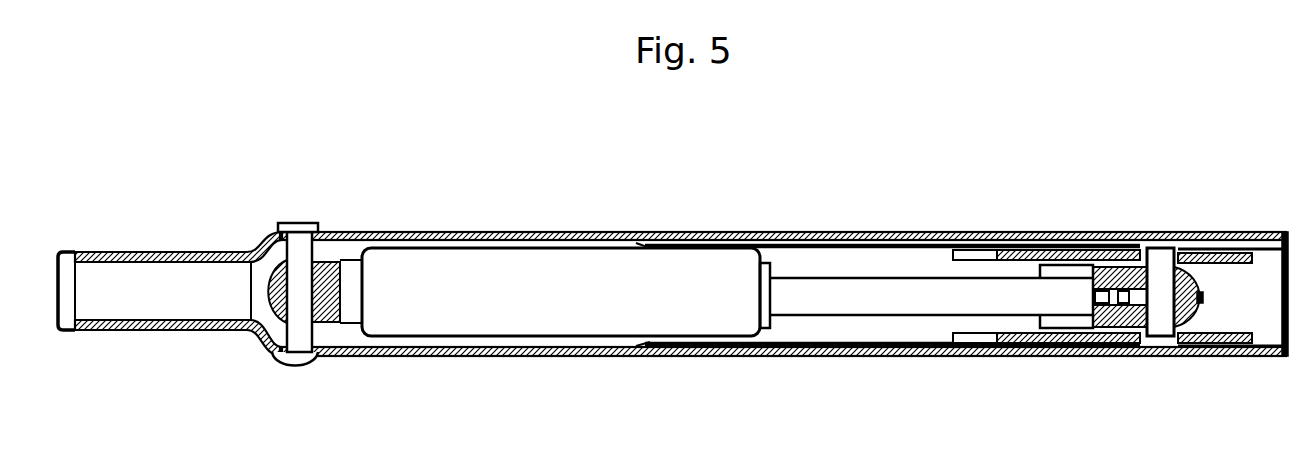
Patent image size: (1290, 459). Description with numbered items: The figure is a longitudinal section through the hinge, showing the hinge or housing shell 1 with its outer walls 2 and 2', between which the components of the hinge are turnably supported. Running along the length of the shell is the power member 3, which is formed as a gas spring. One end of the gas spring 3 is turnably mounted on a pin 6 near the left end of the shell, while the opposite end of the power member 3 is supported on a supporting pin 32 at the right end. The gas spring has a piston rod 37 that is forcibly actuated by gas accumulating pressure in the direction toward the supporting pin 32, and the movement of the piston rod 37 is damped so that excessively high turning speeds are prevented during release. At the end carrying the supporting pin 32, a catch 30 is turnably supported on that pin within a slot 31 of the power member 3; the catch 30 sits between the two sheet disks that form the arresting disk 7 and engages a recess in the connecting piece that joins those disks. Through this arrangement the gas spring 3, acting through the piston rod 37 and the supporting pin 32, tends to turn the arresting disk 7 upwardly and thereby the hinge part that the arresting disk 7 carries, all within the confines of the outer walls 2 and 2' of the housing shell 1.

The hinge or housing shell 1 is at (515, 224).
The outer wall 2 is at (783, 207).
The outer wall 2' is at (783, 378).
The power member 3 is at (690, 278).
The pin 6 is at (302, 250).
The arresting disk 7 is at (1044, 347).
The catch 30 is at (1201, 299).
The slot 31 is at (1197, 322).
The supporting pin 32 is at (1157, 265).
The piston rod 37 is at (823, 303).